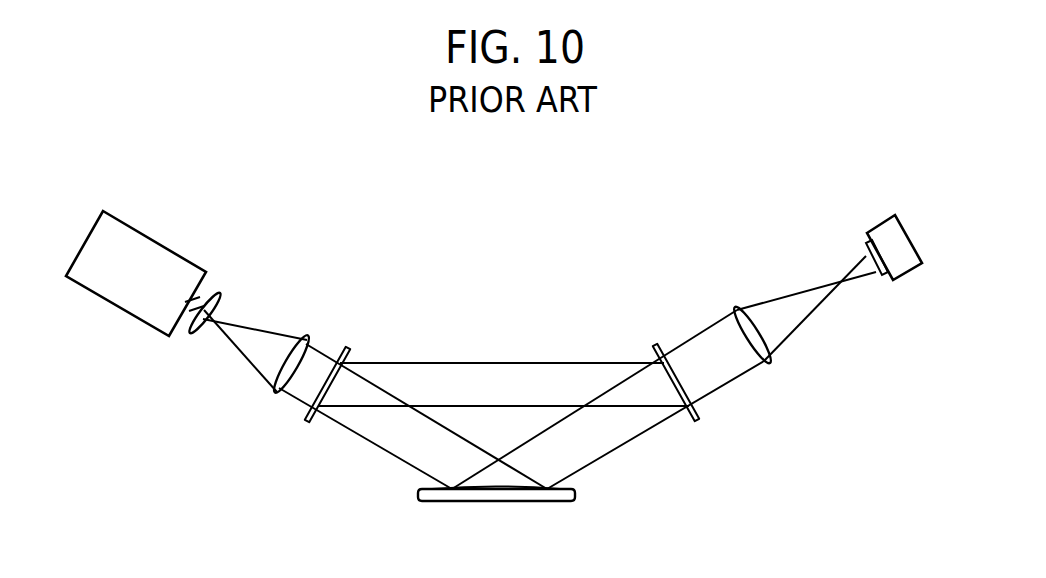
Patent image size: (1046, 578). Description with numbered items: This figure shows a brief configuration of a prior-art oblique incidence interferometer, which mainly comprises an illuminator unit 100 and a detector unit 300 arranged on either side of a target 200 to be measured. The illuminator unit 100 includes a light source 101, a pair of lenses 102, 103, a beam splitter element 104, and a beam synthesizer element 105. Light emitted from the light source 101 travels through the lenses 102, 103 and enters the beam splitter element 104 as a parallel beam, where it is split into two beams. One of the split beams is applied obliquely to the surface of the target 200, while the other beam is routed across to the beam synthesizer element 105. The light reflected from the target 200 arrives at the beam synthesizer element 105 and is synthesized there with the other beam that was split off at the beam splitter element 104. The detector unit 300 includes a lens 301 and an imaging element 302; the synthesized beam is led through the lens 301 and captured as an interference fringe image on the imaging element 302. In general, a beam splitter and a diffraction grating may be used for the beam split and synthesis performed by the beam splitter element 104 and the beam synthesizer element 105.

The illuminator unit 100 is at (340, 226).
The light source 101 is at (138, 231).
The lens 102 is at (213, 293).
The lens 103 is at (305, 333).
The beam splitter element 104 is at (348, 349).
The beam synthesizer element 105 is at (695, 421).
The target 200 is at (586, 499).
The detector unit 300 is at (855, 392).
The lens 301 is at (770, 364).
The imaging element 302 is at (878, 224).